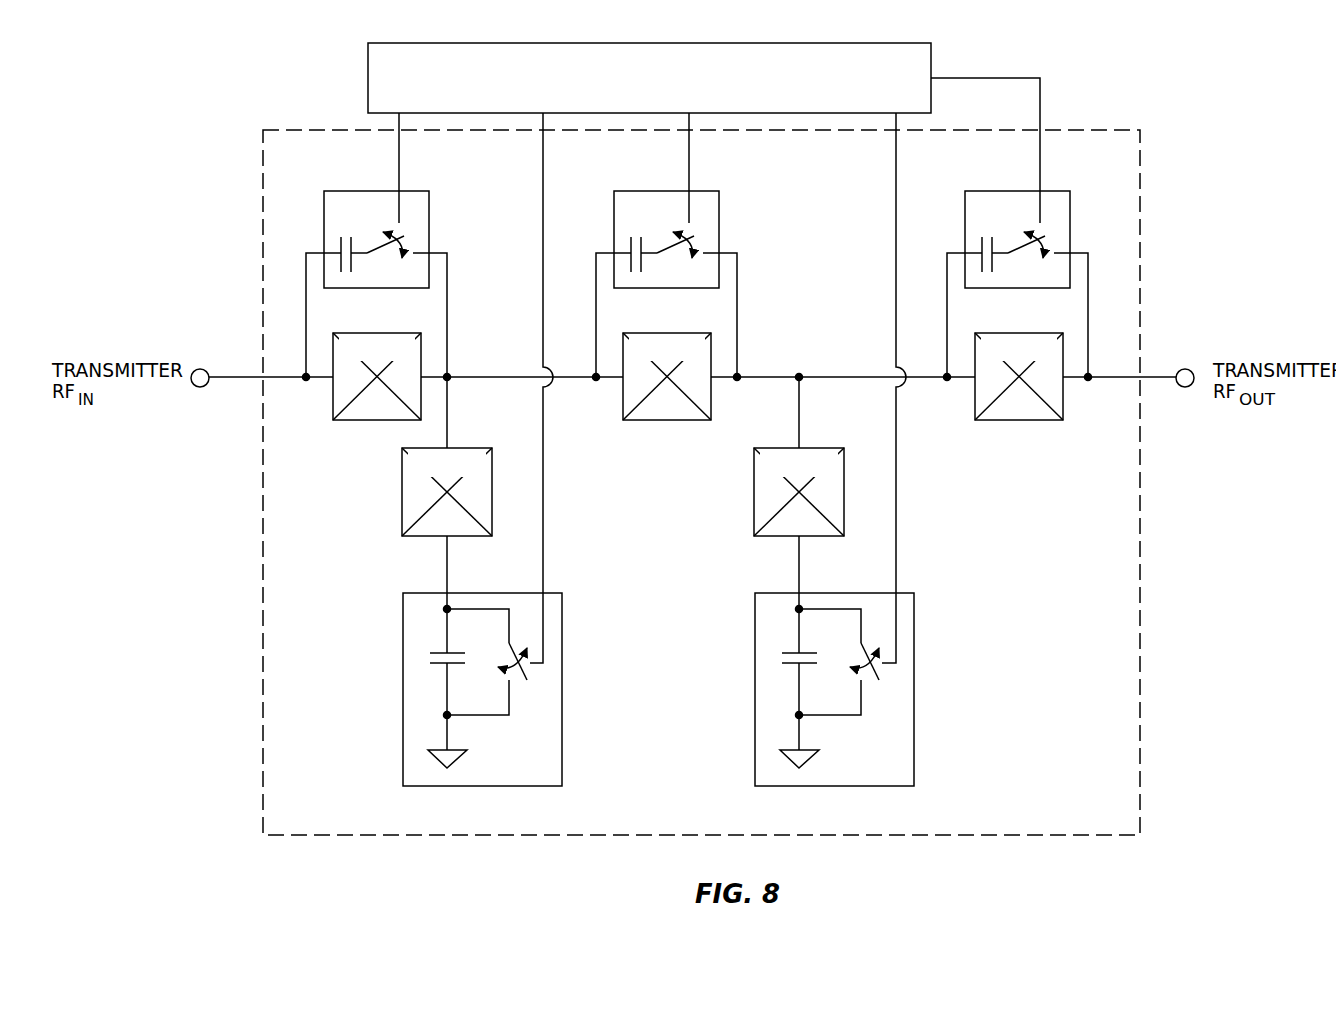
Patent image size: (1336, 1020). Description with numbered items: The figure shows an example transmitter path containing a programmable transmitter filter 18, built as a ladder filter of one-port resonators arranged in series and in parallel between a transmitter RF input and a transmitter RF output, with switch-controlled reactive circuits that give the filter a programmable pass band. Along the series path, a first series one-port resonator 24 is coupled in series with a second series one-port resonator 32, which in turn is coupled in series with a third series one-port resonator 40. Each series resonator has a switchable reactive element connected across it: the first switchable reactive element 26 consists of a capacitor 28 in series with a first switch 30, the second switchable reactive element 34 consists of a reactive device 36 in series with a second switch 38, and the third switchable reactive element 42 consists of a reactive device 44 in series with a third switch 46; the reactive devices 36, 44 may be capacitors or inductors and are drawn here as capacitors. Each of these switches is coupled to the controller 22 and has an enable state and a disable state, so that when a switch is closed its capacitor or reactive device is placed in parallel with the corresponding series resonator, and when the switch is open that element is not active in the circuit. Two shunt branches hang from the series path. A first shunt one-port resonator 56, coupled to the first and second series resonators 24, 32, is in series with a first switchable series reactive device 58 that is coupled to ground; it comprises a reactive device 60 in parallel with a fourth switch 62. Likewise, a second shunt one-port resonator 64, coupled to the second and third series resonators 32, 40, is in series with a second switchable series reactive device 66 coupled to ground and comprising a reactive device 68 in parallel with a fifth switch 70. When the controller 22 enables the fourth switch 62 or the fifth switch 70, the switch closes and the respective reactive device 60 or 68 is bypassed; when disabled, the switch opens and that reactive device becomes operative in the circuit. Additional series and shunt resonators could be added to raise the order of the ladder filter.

The programmable transmitter filter 18 is at (308, 803).
The controller 22 is at (642, 104).
The first series one-port resonator 24 is at (351, 422).
The first switchable reactive element 26 is at (384, 218).
The capacitor 28 is at (357, 241).
The first switch 30 is at (413, 251).
The second series one-port resonator 32 is at (688, 423).
The second switchable reactive element 34 is at (674, 218).
The reactive device 36 is at (647, 241).
The second switch 38 is at (703, 251).
The third series one-port resonator 40 is at (1040, 422).
The third switchable reactive element 42 is at (1028, 218).
The reactive device 44 is at (998, 241).
The third switch 46 is at (1054, 251).
The first shunt one-port resonator 56 is at (465, 537).
The first switchable series reactive device 58 is at (480, 682).
The reactive device 60 is at (430, 655).
The fourth switch 62 is at (518, 683).
The second shunt one-port resonator 64 is at (817, 537).
The second switchable series reactive device 66 is at (842, 689).
The reactive device 68 is at (782, 655).
The fifth switch 70 is at (870, 683).